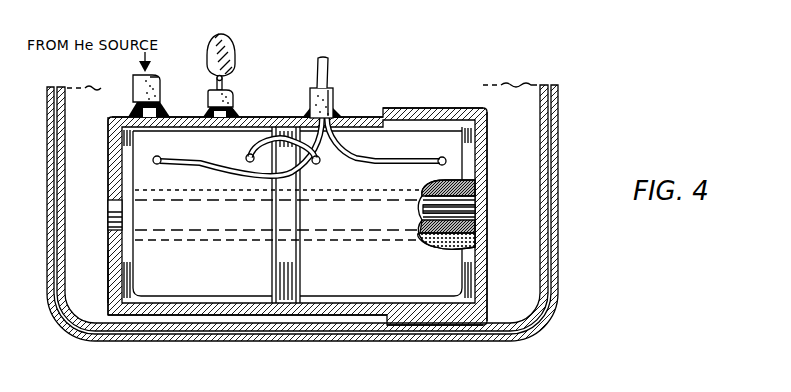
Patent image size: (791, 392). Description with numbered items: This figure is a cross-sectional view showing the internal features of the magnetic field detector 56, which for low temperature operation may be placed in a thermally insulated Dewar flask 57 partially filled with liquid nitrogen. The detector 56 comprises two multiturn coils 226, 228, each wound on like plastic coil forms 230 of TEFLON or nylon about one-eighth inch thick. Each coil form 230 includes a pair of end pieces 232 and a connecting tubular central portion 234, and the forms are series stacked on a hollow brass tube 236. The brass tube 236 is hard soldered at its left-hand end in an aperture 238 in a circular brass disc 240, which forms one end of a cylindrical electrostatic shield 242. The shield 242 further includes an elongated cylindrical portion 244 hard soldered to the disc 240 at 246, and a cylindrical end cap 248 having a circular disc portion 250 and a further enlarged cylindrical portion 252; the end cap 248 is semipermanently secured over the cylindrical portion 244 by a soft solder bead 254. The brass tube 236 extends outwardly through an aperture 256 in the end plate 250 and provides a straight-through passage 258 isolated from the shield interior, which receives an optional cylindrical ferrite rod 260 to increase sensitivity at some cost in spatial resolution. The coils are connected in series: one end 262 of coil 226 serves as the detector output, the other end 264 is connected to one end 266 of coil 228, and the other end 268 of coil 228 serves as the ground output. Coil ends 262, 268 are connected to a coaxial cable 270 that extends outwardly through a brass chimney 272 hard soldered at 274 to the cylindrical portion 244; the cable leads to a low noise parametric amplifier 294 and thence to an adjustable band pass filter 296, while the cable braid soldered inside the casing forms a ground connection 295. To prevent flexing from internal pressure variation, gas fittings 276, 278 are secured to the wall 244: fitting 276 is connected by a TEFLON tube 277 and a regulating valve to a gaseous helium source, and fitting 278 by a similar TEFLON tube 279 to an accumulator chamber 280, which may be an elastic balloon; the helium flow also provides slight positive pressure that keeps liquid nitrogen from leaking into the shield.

The detector 56 is at (524, 150).
The Dewar flask 57 is at (558, 113).
The multiturn coil 226 is at (397, 257).
The multiturn coil 228 is at (230, 257).
The coil form 230 is at (140, 285).
The end piece 232 is at (140, 283).
The tubular central portion 234 is at (406, 193).
The brass tube 236 is at (483, 200).
The aperture 238 is at (110, 201).
The circular brass disc 240 is at (112, 150).
The electrostatic shield 242 is at (231, 320).
The elongated cylindrical portion 244 is at (317, 318).
The hard solder joint 246 is at (109, 122).
The cylindrical end cap 248 is at (493, 134).
The circular disc portion 250 is at (485, 251).
The enlarged cylindrical portion 252 is at (427, 108).
The soft solder bead 254 is at (379, 108).
The aperture 256 is at (482, 210).
The straight-through passage 258 is at (414, 211).
The ferrite rod 260 is at (181, 198).
The coil end 262 is at (386, 160).
The coil end 264 is at (316, 163).
The coil end 266 is at (251, 155).
The coil end 268 is at (186, 162).
The coaxial cable 270 is at (317, 65).
The brass chimney 272 is at (333, 100).
The hard solder joint 274 is at (308, 113).
The gas fitting 276 is at (160, 108).
The TEFLON tube 277 is at (158, 84).
The gas fitting 278 is at (237, 108).
The TEFLON tube 279 is at (235, 88).
The accumulator chamber 280 is at (229, 49).
The low noise parametric amplifier 294 is at (545, 385).
The ground connection 295 is at (113, 158).
The adjustable band pass filter 296 is at (690, 385).